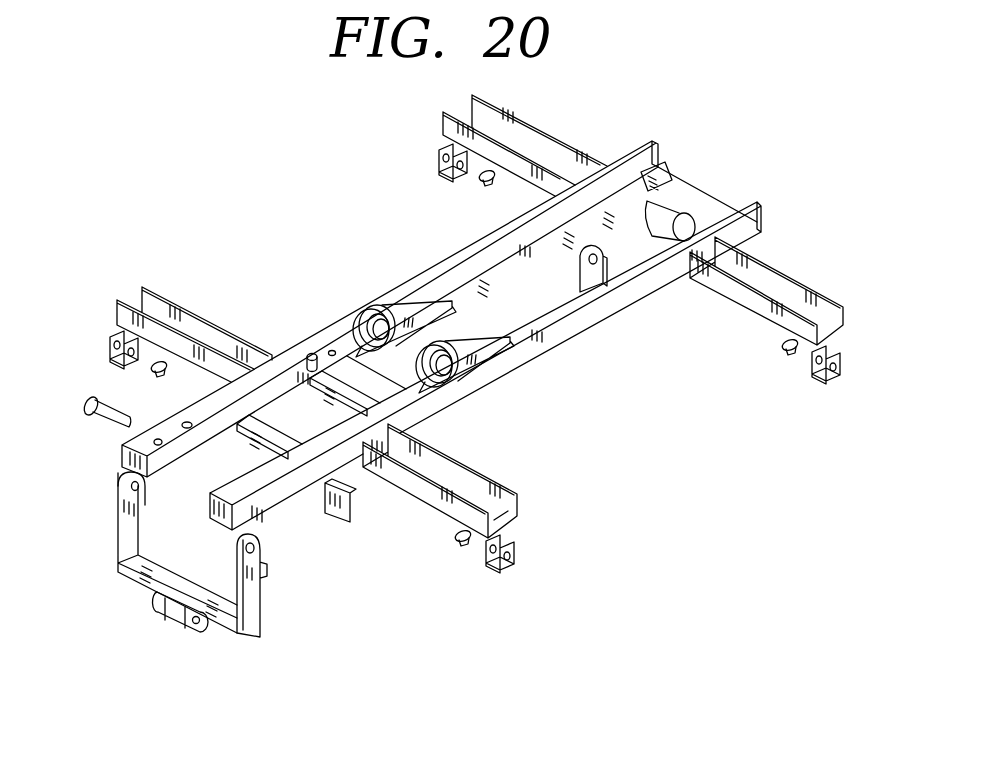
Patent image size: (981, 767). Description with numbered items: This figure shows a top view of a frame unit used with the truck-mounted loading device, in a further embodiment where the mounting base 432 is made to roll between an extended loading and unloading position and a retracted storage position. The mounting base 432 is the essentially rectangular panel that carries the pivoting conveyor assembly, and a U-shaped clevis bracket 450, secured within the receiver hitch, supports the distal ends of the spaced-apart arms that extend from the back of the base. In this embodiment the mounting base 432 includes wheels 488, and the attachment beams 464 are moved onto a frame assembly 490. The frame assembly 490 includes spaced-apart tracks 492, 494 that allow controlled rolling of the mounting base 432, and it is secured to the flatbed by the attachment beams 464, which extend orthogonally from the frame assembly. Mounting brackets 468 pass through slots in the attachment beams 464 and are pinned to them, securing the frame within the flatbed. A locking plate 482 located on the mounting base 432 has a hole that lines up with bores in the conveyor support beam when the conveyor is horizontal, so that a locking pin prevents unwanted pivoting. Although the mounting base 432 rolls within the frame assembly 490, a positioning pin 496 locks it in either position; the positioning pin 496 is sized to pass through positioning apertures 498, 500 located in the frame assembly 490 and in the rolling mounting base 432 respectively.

The mounting base 432 is at (503, 287).
The U-shaped clevis bracket 450 is at (125, 575).
The attachment beams 464 is at (500, 130).
The mounting brackets 468 is at (440, 144).
The locking plate 482 is at (597, 271).
The wheels 488 is at (612, 182).
The frame assembly 490 is at (333, 210).
The track 492 is at (543, 335).
The track 494 is at (189, 424).
The positioning pin 496 is at (86, 410).
The positioning aperture 498 is at (153, 435).
The positioning aperture 500 is at (330, 353).